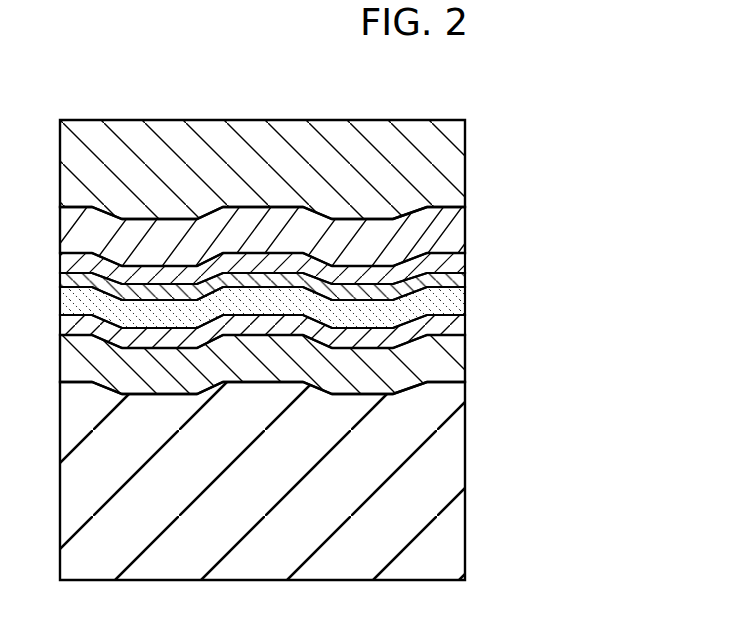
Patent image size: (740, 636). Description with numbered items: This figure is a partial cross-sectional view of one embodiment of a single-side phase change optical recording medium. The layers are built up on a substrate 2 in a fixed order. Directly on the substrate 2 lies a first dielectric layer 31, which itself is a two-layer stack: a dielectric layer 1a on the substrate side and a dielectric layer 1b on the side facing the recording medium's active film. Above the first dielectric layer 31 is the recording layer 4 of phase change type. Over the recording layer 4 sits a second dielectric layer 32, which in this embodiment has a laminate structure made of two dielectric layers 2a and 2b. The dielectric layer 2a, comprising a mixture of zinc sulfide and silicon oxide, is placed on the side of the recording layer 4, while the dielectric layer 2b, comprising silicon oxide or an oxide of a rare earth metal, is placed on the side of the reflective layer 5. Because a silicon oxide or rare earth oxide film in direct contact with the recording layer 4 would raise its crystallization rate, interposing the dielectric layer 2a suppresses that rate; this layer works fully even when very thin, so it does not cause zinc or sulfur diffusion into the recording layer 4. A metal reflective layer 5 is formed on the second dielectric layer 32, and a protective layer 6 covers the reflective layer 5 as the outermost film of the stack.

The protective layer 6 is at (458, 171).
The reflective layer 5 is at (467, 238).
The dielectric layer 2b is at (467, 265).
The dielectric layer 2a is at (467, 282).
The second dielectric layer 32 is at (375, 258).
The recording layer 4 is at (465, 300).
The dielectric layer 1b is at (465, 328).
The dielectric layer 1a is at (467, 363).
The first dielectric layer 31 is at (369, 390).
The substrate 2 is at (465, 477).